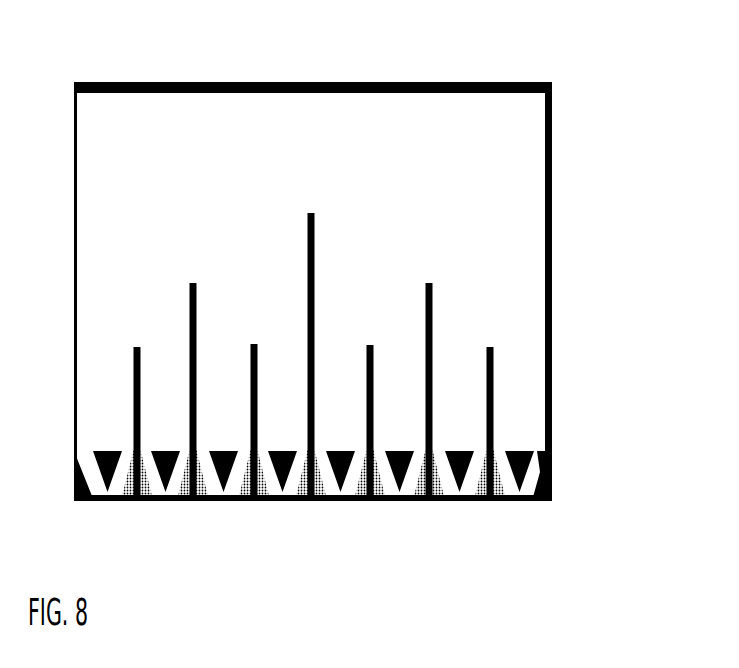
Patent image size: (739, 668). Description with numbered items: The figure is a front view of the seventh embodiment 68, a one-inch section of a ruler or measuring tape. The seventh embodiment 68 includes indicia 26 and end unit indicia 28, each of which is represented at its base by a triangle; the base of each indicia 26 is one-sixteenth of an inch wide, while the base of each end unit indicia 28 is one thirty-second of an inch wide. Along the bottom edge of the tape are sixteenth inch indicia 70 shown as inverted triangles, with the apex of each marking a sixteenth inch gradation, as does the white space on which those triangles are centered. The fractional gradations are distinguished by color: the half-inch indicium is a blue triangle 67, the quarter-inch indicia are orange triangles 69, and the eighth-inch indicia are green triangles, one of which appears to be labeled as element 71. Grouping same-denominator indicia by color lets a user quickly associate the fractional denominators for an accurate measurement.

The indicia 26 is at (305, 258).
The end unit indicia 28 is at (565, 66).
The blue triangle 67 is at (310, 499).
The seventh embodiment 68 is at (365, 298).
The orange triangles 69 is at (428, 499).
The sixteenth inch indicia 70 is at (521, 448).
The third light guide region 71 is at (487, 499).